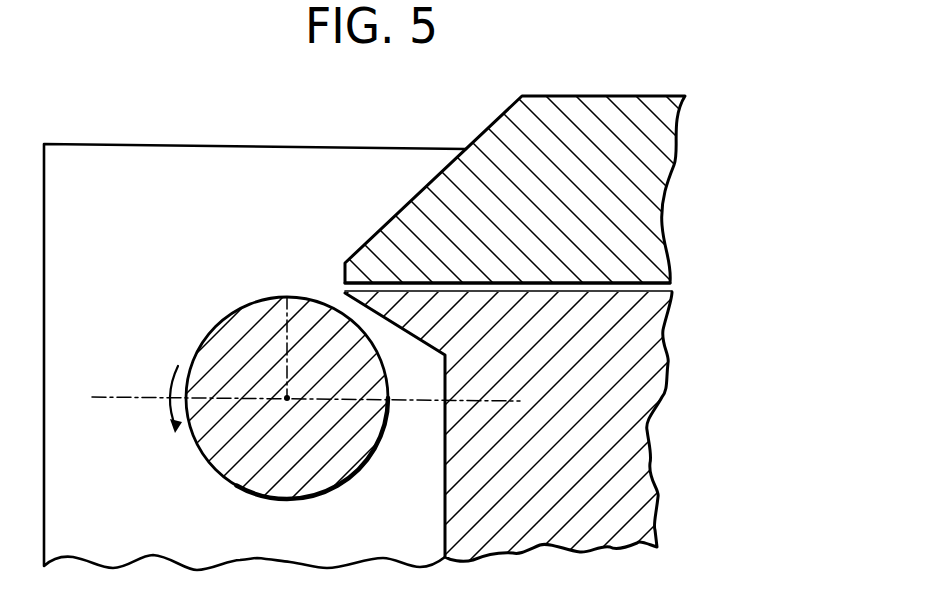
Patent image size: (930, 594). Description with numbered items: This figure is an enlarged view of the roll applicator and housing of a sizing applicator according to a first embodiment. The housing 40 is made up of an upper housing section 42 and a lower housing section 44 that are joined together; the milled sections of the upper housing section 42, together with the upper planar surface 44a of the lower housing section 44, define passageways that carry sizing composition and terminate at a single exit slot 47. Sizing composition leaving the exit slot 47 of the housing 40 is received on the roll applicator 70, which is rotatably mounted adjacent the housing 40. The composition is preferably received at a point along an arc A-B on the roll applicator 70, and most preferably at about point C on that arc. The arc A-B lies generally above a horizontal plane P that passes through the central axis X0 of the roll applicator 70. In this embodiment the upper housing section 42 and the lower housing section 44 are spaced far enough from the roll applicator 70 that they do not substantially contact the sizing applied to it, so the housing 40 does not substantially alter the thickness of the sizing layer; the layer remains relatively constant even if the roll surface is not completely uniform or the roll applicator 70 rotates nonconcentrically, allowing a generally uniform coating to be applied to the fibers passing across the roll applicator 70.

The housing 40 is at (485, 297).
The upper housing section 42 is at (642, 185).
The lower housing section 44 is at (485, 297).
The upper planar surface 44a is at (623, 288).
The exit slot 47 is at (345, 284).
The roll applicator 70 is at (213, 453).
The point A is at (287, 297).
The point B is at (386, 398).
The point C is at (335, 312).
The horizontal plane P is at (110, 398).
The central axis X0 is at (287, 398).